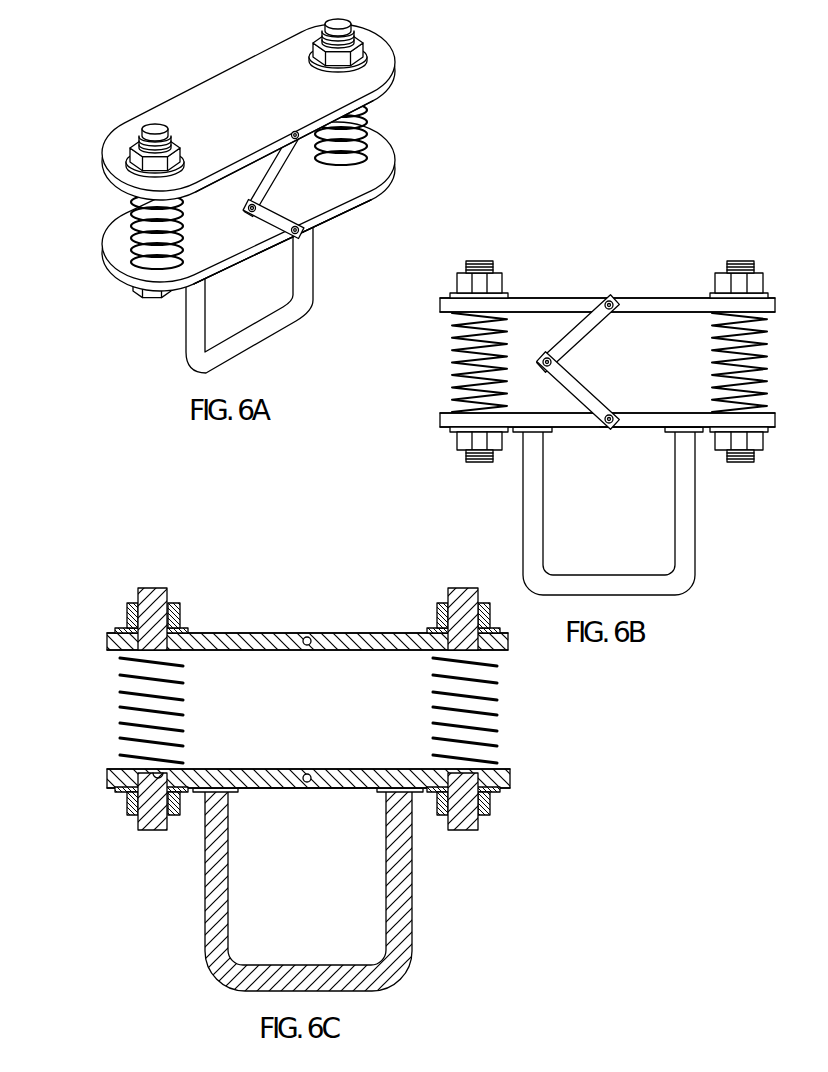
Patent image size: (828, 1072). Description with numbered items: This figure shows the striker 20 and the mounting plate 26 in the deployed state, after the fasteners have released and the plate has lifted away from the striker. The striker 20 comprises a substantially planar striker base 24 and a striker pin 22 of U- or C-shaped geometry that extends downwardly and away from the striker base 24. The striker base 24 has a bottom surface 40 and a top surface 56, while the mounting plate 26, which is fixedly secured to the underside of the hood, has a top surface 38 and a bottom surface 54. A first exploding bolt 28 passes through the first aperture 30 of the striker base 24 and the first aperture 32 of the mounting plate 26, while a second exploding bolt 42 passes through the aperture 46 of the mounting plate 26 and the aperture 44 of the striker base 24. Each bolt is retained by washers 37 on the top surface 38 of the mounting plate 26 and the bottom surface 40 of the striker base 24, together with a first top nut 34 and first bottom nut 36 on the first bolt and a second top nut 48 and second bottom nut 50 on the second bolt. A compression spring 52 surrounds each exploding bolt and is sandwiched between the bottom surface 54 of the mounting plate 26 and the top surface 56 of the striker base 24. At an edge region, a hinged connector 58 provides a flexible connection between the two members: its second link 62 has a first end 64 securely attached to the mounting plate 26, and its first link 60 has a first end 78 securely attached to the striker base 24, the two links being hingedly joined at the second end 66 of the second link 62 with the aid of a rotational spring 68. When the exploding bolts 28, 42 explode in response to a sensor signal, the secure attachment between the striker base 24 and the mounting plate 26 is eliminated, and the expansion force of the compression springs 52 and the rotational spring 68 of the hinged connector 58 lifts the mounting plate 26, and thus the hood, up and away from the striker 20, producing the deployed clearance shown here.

In FIG. 6A, the striker 20 is at (420, 158).
In FIG. 6B, the striker 20 is at (418, 419).
In FIG. 6C, the striker 20 is at (532, 767).
In FIG. 6A, the striker pin 22 is at (278, 322).
In FIG. 6B, the striker pin 22 is at (656, 591).
In FIG. 6C, the striker pin 22 is at (360, 982).
In FIG. 6A, the striker base 24 is at (271, 220).
In FIG. 6B, the striker base 24 is at (587, 423).
In FIG. 6C, the striker base 24 is at (300, 781).
In FIG. 6A, the mounting plate 26 is at (263, 112).
In FIG. 6B, the mounting plate 26 is at (587, 315).
In FIG. 6C, the mounting plate 26 is at (294, 642).
In FIG. 6A, the first exploding bolt 28 is at (155, 127).
In FIG. 6B, the first exploding bolt 28 is at (474, 262).
In FIG. 6C, the first exploding bolt 28 is at (160, 590).
In FIG. 6C, the first aperture of striker base 30 is at (162, 774).
In FIG. 6C, the first aperture of mounting plate 32 is at (137, 629).
In FIG. 6A, the first top nut 34 is at (131, 142).
In FIG. 6B, the first top nut 34 is at (497, 274).
In FIG. 6C, the first top nut 34 is at (178, 608).
In FIG. 6A, the first bottom nut 36 is at (135, 290).
In FIG. 6B, the first bottom nut 36 is at (458, 445).
In FIG. 6C, the first bottom nut 36 is at (130, 811).
In FIG. 6A, the washers 37 is at (128, 164).
In FIG. 6B, the washers 37 is at (453, 292).
In FIG. 6C, the washers 37 is at (181, 629).
In FIG. 6A, the top surface of mounting plate 38 is at (228, 90).
In FIG. 6B, the top surface of mounting plate 38 is at (654, 297).
In FIG. 6C, the top surface of mounting plate 38 is at (250, 633).
In FIG. 6A, the bottom surface of striker base 40 is at (378, 191).
In FIG. 6B, the bottom surface of striker base 40 is at (570, 428).
In FIG. 6C, the bottom surface of striker base 40 is at (281, 795).
In FIG. 6A, the second exploding bolt 42 is at (334, 20).
In FIG. 6B, the second exploding bolt 42 is at (738, 261).
In FIG. 6C, the second exploding bolt 42 is at (462, 588).
In FIG. 6A, the aperture of striker base 44 is at (347, 201).
In FIG. 6B, the aperture of striker base 44 is at (658, 429).
In FIG. 6C, the aperture of striker base 44 is at (356, 794).
In FIG. 6C, the aperture of mounting plate 46 is at (489, 617).
In FIG. 6A, the second top nut 48 is at (366, 45).
In FIG. 6B, the second top nut 48 is at (757, 274).
In FIG. 6C, the second top nut 48 is at (441, 605).
In FIG. 6B, the second bottom nut 50 is at (756, 452).
In FIG. 6C, the second bottom nut 50 is at (488, 811).
In FIG. 6A, the compression spring 52 is at (130, 200).
In FIG. 6B, the compression spring 52 is at (452, 338).
In FIG. 6C, the compression spring 52 is at (183, 682).
In FIG. 6A, the bottom surface of mounting plate 54 is at (383, 95).
In FIG. 6B, the bottom surface of mounting plate 54 is at (657, 314).
In FIG. 6C, the bottom surface of mounting plate 54 is at (367, 652).
In FIG. 6A, the top surface of striker base 56 is at (380, 152).
In FIG. 6B, the top surface of striker base 56 is at (668, 412).
In FIG. 6C, the top surface of striker base 56 is at (375, 769).
In FIG. 6A, the hinged connector 58 is at (269, 189).
In FIG. 6B, the hinged connector 58 is at (597, 344).
In FIG. 6A, the first link 60 is at (277, 245).
In FIG. 6B, the first link 60 is at (570, 387).
In FIG. 6A, the second link 62 is at (276, 189).
In FIG. 6B, the second link 62 is at (574, 332).
In FIG. 6A, the first end of second link 64 is at (297, 142).
In FIG. 6B, the first end of second link 64 is at (610, 300).
In FIG. 6A, the second end of second link 66 is at (251, 214).
In FIG. 6B, the second end of second link 66 is at (552, 360).
In FIG. 6A, the rotational spring 68 is at (226, 228).
In FIG. 6B, the rotational spring 68 is at (582, 352).
In FIG. 6A, the first end of first link 78 is at (301, 235).
In FIG. 6B, the first end of first link 78 is at (614, 416).